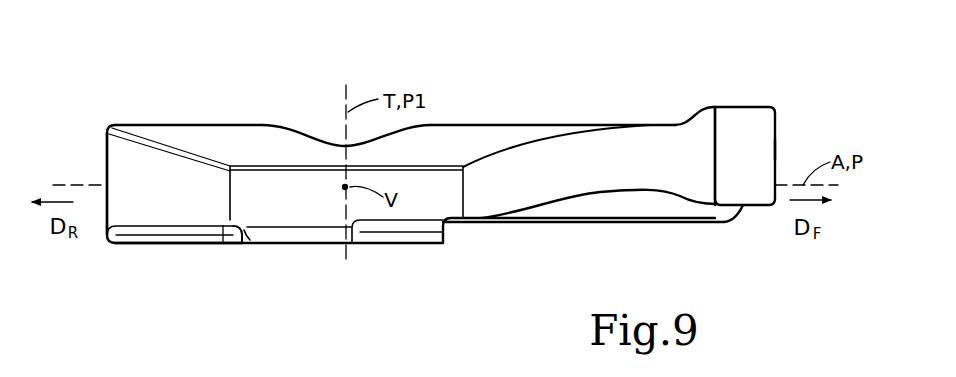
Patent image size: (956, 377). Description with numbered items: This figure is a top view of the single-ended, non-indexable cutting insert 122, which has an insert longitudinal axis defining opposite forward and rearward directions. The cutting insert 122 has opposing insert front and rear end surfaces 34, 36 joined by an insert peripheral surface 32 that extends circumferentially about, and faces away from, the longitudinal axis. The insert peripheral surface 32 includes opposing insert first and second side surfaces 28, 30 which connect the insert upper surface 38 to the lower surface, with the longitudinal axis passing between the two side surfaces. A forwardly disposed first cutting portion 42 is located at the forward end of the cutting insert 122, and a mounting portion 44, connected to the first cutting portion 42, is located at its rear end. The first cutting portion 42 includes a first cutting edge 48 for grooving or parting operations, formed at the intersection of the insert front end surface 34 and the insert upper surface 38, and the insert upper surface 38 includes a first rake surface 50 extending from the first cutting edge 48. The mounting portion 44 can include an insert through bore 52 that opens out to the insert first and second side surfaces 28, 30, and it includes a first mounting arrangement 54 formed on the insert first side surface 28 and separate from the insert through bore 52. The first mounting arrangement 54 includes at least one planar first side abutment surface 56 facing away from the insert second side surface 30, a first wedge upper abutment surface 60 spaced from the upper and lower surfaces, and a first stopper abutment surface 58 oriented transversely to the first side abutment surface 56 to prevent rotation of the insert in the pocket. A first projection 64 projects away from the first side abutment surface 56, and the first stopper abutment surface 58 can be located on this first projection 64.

The insert first side surface 28 is at (221, 259).
The insert second side surface 30 is at (228, 110).
The insert peripheral surface 32 is at (492, 135).
The insert front end surface 34 is at (784, 120).
The insert rear end surface 36 is at (106, 146).
The insert upper surface 38 is at (276, 210).
The first cutting portion 42 is at (752, 75).
The mounting portion 44 is at (307, 116).
The first cutting edge 48 is at (775, 149).
The first rake surface 50 is at (757, 163).
The insert through bore 52 is at (315, 259).
The first mounting arrangement 54 is at (249, 257).
The first side abutment surface 56 is at (138, 229).
The first stopper abutment surface 58 is at (157, 238).
The first wedge upper abutment surface 60 is at (422, 235).
The first projection 64 is at (183, 256).
The cutting insert 122 is at (632, 80).